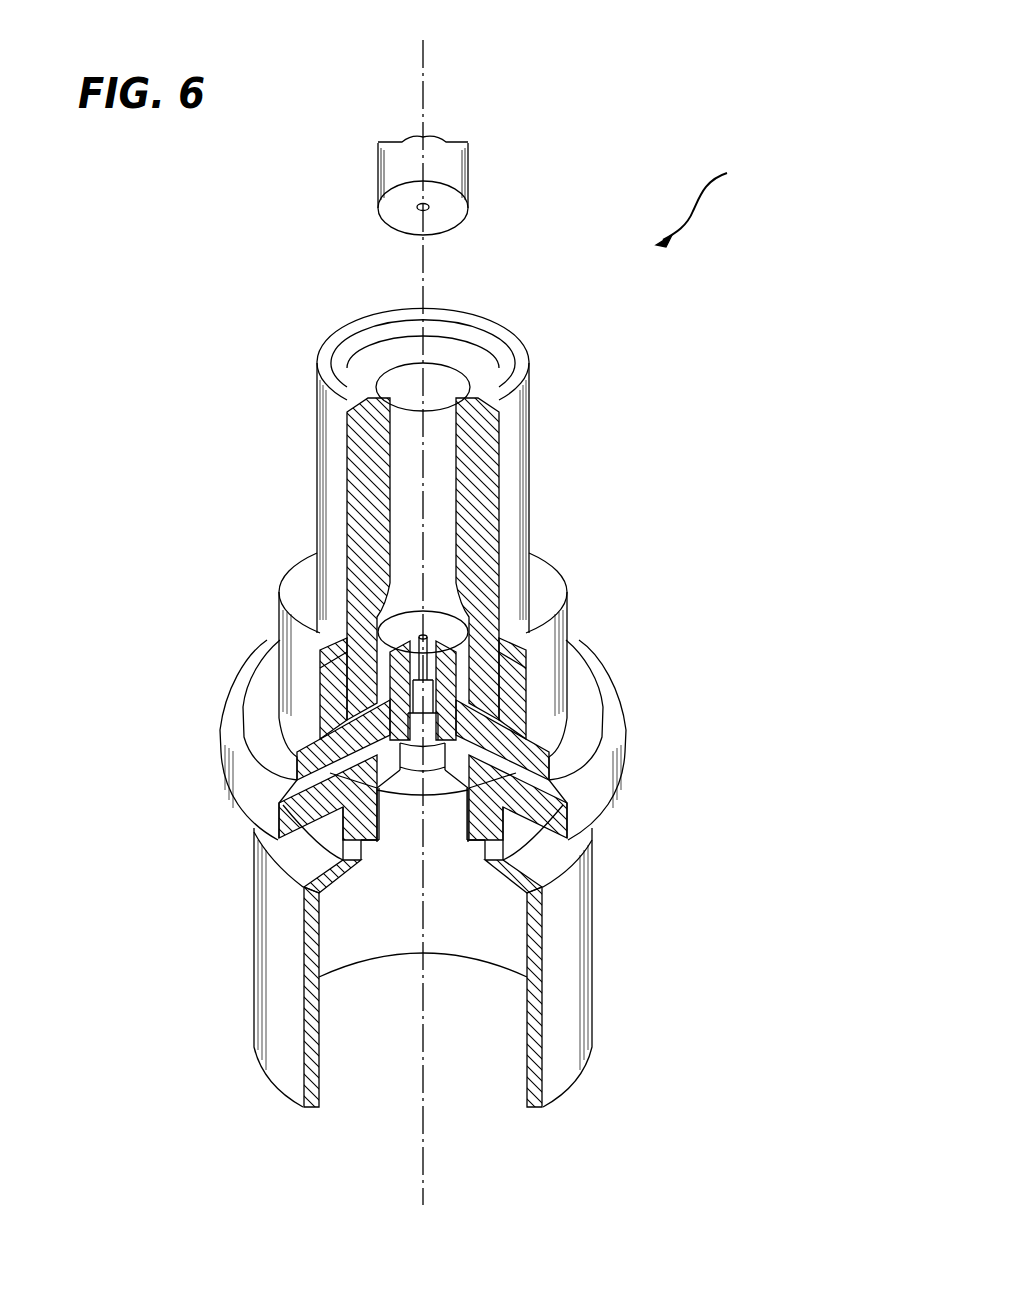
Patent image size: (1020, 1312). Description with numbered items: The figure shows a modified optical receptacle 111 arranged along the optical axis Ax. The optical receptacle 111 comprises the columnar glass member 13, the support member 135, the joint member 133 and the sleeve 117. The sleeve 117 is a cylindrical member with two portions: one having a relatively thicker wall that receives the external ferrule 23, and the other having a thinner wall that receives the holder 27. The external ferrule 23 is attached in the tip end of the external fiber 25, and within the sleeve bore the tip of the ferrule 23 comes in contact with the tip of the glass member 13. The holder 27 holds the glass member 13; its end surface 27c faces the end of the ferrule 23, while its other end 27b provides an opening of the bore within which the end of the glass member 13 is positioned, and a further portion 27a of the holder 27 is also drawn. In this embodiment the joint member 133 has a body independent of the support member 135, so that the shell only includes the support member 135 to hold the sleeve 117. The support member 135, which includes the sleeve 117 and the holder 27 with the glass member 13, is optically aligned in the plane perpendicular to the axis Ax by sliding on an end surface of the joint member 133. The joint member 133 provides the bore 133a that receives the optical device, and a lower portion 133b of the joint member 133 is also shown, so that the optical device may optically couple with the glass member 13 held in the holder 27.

The optical receptacle 111 is at (781, 164).
The external ferrule 23 is at (452, 170).
The external fiber 25 is at (429, 208).
The sleeve 117 is at (538, 402).
The columnar glass member 13 is at (430, 634).
The holder 27 is at (411, 647).
The seal member portion 27a is at (368, 663).
The other end of holder 27b is at (392, 757).
The end surface of holder 27c is at (378, 596).
The support member 135 is at (574, 707).
The joint member 133 is at (595, 799).
The bore 133a is at (461, 935).
The cylindrical portion 133b is at (574, 944).
The optical axis Ax is at (424, 604).